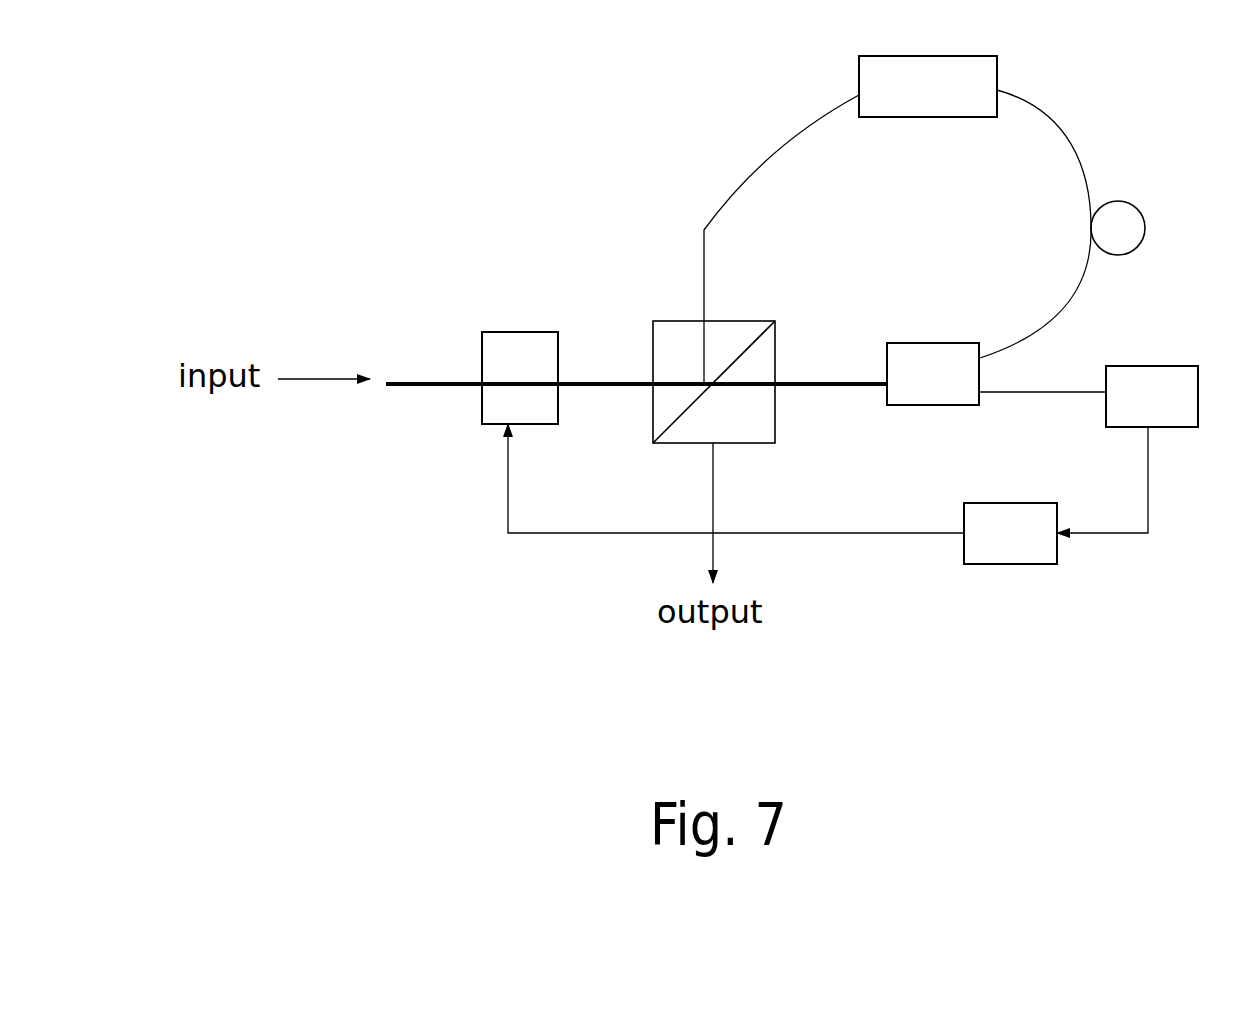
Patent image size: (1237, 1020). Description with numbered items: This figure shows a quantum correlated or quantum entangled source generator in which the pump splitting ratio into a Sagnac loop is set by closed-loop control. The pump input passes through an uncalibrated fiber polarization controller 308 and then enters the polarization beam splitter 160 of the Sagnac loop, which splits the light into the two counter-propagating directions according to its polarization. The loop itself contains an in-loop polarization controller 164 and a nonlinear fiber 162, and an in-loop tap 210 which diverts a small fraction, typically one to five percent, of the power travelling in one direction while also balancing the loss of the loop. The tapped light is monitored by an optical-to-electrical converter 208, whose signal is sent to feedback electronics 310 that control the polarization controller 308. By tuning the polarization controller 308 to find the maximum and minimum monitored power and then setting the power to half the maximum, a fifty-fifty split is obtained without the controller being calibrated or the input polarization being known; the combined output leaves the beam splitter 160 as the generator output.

The polarization beam splitter of the Sagnac loop 160 is at (691, 362).
The nonlinear fiber 162 is at (1158, 227).
The in-loop polarization controller 164 is at (928, 64).
The optical-to-electrical converter 208 is at (1152, 374).
The in-loop tap 210 is at (933, 352).
The fiber polarization controller 308 is at (521, 355).
The feedback electronics 310 is at (1010, 512).